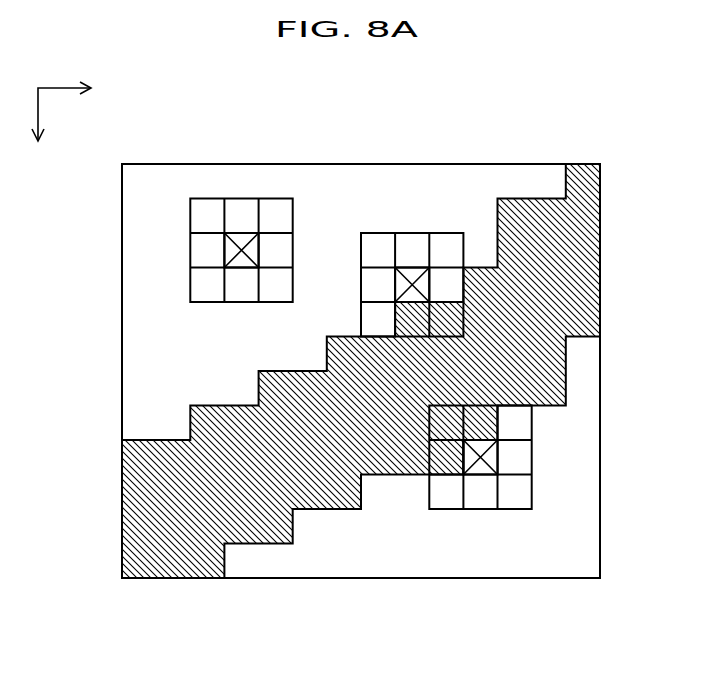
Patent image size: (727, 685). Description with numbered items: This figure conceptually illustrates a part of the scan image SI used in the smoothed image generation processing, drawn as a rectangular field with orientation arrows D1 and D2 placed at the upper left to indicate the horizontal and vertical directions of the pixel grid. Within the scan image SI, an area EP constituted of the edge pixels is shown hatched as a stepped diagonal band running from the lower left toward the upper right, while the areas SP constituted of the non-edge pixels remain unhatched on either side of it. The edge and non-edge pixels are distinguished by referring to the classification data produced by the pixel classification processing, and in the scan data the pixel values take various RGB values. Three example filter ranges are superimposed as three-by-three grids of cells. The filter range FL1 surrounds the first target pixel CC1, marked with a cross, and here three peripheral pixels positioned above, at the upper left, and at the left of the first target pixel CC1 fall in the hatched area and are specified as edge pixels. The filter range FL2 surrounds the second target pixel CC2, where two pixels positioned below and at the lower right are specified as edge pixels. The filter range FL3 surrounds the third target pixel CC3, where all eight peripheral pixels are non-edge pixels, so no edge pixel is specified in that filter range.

The scan image SI is at (516, 164).
The area constituted of the edge pixels EP is at (133, 497).
The areas constituted of the non-edge pixels SP is at (130, 307).
The filter range FL1 is at (437, 510).
The filter range FL2 is at (370, 233).
The filter range FL3 is at (200, 198).
The first target pixel CC1 is at (480, 475).
The second target pixel CC2 is at (410, 268).
The third target pixel CC3 is at (238, 233).
The first direction D1 is at (82, 108).
The second direction D2 is at (37, 148).